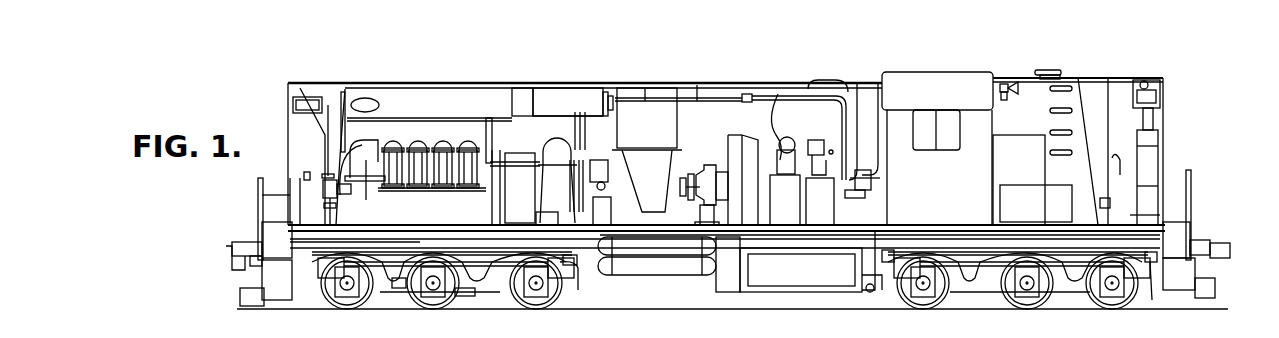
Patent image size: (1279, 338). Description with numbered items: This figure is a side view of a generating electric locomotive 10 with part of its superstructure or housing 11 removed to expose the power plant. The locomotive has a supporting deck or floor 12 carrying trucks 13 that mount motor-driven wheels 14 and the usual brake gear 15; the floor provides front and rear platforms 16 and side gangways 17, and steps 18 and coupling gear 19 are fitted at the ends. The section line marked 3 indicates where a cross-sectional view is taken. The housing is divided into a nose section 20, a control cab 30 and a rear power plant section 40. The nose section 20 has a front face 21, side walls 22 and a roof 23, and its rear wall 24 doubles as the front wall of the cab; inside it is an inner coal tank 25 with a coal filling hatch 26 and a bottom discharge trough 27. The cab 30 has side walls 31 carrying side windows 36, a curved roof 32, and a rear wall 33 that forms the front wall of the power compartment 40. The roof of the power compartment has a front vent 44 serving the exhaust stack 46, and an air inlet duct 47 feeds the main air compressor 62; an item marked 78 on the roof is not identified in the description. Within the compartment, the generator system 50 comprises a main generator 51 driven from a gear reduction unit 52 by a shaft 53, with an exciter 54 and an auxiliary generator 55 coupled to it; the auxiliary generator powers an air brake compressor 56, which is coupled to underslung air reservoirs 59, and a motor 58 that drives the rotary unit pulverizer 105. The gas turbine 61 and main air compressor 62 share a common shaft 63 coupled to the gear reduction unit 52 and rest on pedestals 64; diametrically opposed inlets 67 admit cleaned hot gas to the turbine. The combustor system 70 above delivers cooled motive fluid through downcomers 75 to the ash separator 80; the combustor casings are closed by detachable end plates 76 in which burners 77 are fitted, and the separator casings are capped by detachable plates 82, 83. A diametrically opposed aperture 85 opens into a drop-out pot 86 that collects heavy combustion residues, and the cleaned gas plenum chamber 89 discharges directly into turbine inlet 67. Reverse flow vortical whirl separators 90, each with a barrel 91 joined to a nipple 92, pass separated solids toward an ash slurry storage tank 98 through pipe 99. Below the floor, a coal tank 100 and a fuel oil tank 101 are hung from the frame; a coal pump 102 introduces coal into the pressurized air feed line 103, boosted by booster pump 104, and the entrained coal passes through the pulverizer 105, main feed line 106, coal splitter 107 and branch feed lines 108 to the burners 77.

The section line 3- 3 is at (496, 64).
The generating electric locomotive 10 is at (639, 76).
The superstructure or housing 11 is at (870, 81).
The supporting deck or floor 12 is at (387, 226).
The trucks 13 is at (443, 248).
The motor-driven wheels 14 is at (348, 305).
The brake gear 15 is at (405, 292).
The front and rear platforms 16 is at (270, 222).
The side platforms or gangways 17 is at (295, 210).
The steps 18 is at (278, 283).
The coupling gear 19 is at (235, 251).
The nose section 20 is at (1172, 144).
The front wall or face 21 is at (1163, 158).
The side walls 22 is at (1056, 151).
The roof 23 is at (1017, 78).
The rear wall 24 is at (1000, 165).
The inner tank 25 is at (1121, 151).
The coal filling hatch 26 is at (1056, 68).
The bottom discharge trough 27 is at (1110, 203).
The control cab section 30 is at (928, 181).
The side walls 31 is at (968, 199).
The curved roof 32 is at (947, 78).
The rear wall 33 is at (882, 165).
The side windows 36 is at (947, 120).
The rear power plant section 40 is at (550, 62).
The front vent or opening 44 is at (648, 86).
The exhaust stack 46 is at (647, 150).
The air inlet stack or duct 47 is at (492, 160).
The main generator system 50 is at (738, 118).
The main generator 51 is at (722, 192).
The gear reduction unit 52 is at (721, 207).
The shaft 53 is at (726, 165).
The exciter 54 is at (789, 142).
The auxiliary generator 55 is at (777, 212).
The air brake compressor 56 is at (817, 142).
The motor 58 is at (819, 208).
The air reservoirs 59 is at (657, 257).
The gas turbine 61 is at (557, 196).
The main air compressor 62 is at (525, 160).
The common shaft 63 is at (682, 172).
The pedestal 64 is at (614, 213).
The inlets 67 is at (576, 153).
The combustor system 70 is at (592, 92).
The downcomers 75 is at (372, 113).
The detachable end plate 76 is at (344, 94).
The burners 77 is at (678, 98).
The box 78 is at (521, 90).
The ash separator 80 is at (459, 120).
The detachable plate 82 is at (340, 140).
The detachable plate 83 is at (582, 138).
The diametrically opposed aperture 85 is at (337, 195).
The drop-out pot 86 is at (368, 172).
The cleaned gas plenum chamber 89 is at (568, 102).
The reverse flow vortical whirl separators 90 is at (446, 190).
The cylindrical body or barrel 91 is at (428, 150).
The nipple 92 is at (393, 146).
The ash slurry storage tank 98 is at (570, 292).
The pipe 99 is at (335, 213).
The coal storage tank 100 is at (800, 282).
The fuel oil tank 101 is at (722, 292).
The coal pump 102 is at (880, 292).
The pressurized combustive air feed line 103 is at (862, 280).
The booster pump 104 is at (778, 118).
The rotary unit pulverizer 105 is at (876, 180).
The main feed line 106 is at (815, 94).
The coal splitter 107 is at (750, 94).
The branch feed lines 108 is at (708, 80).